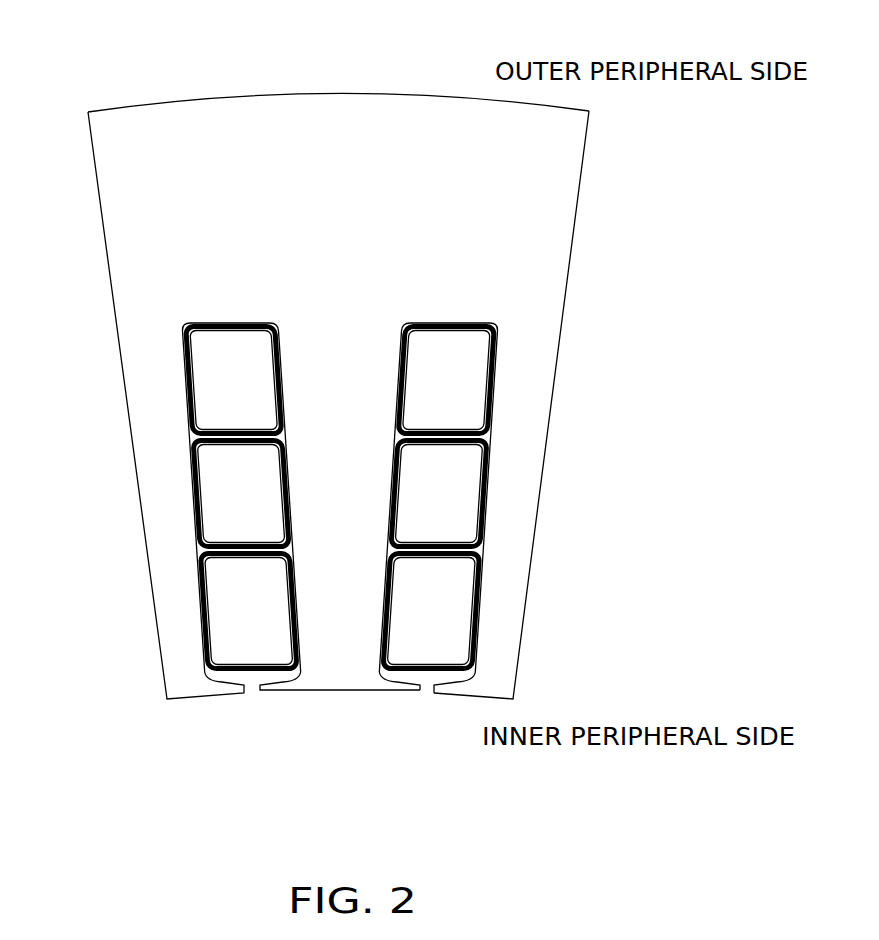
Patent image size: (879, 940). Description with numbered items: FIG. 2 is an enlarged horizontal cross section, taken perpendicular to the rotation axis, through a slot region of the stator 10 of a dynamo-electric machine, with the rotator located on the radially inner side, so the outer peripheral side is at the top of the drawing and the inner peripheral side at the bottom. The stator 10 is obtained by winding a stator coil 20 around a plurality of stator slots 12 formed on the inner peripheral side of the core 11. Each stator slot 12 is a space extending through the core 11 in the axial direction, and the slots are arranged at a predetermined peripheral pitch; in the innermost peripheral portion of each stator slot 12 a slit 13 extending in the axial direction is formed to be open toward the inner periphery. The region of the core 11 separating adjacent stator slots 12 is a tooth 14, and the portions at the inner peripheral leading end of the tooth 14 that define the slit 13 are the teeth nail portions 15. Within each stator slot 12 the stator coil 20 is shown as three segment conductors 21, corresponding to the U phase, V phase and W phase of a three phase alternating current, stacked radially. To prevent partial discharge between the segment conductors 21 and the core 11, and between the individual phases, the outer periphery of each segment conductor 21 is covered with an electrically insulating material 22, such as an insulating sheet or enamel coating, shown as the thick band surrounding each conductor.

The stator 10 is at (114, 86).
The core 11 is at (565, 183).
The stator slot 12 is at (250, 675).
The slit 13 is at (425, 687).
The tooth 14 is at (332, 618).
The teeth nail portion 15 is at (405, 680).
The stator coil 20 is at (377, 523).
The segment conductor 21 is at (470, 382).
The electrically insulating material 22 is at (190, 440).